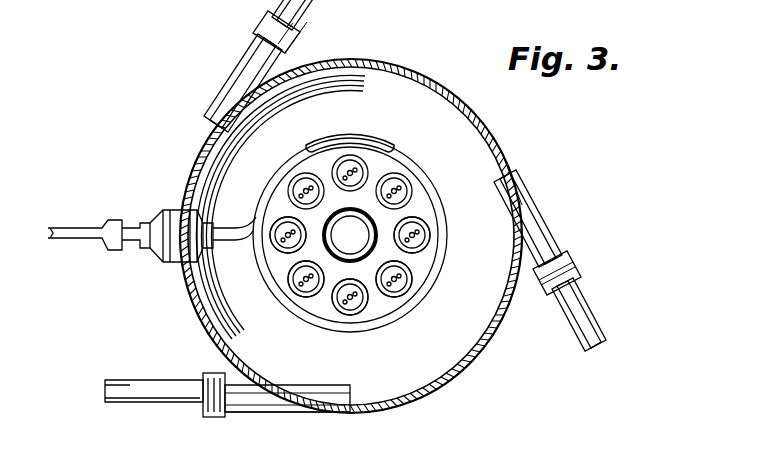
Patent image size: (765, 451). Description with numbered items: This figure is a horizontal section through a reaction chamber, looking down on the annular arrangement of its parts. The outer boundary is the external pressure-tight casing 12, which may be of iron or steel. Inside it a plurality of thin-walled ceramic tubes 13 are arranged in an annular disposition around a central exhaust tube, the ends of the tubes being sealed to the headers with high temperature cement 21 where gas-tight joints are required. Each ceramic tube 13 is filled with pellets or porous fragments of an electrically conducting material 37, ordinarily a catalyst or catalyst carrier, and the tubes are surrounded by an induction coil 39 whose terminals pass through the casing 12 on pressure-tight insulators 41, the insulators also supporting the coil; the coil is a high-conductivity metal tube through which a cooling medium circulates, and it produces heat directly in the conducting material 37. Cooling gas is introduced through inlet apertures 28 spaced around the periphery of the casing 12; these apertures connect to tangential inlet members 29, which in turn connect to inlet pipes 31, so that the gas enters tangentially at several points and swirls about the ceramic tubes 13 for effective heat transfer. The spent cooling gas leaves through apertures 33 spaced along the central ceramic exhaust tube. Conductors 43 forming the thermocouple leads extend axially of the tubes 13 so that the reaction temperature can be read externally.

The external pressure-tight casing 12 is at (421, 70).
The thin-walled ceramic tubes 13 is at (391, 297).
The high temperature cement 21 is at (414, 216).
The inlet apertures 28 is at (248, 105).
The tangential inlet members 29 is at (262, 57).
The inlet pipes 31 is at (313, 13).
The apertures 33 is at (342, 261).
The electrically conducting material 37 is at (421, 249).
The induction coil 39 is at (371, 135).
The pressure-tight insulators 41 is at (176, 256).
The conductors 43 is at (299, 277).